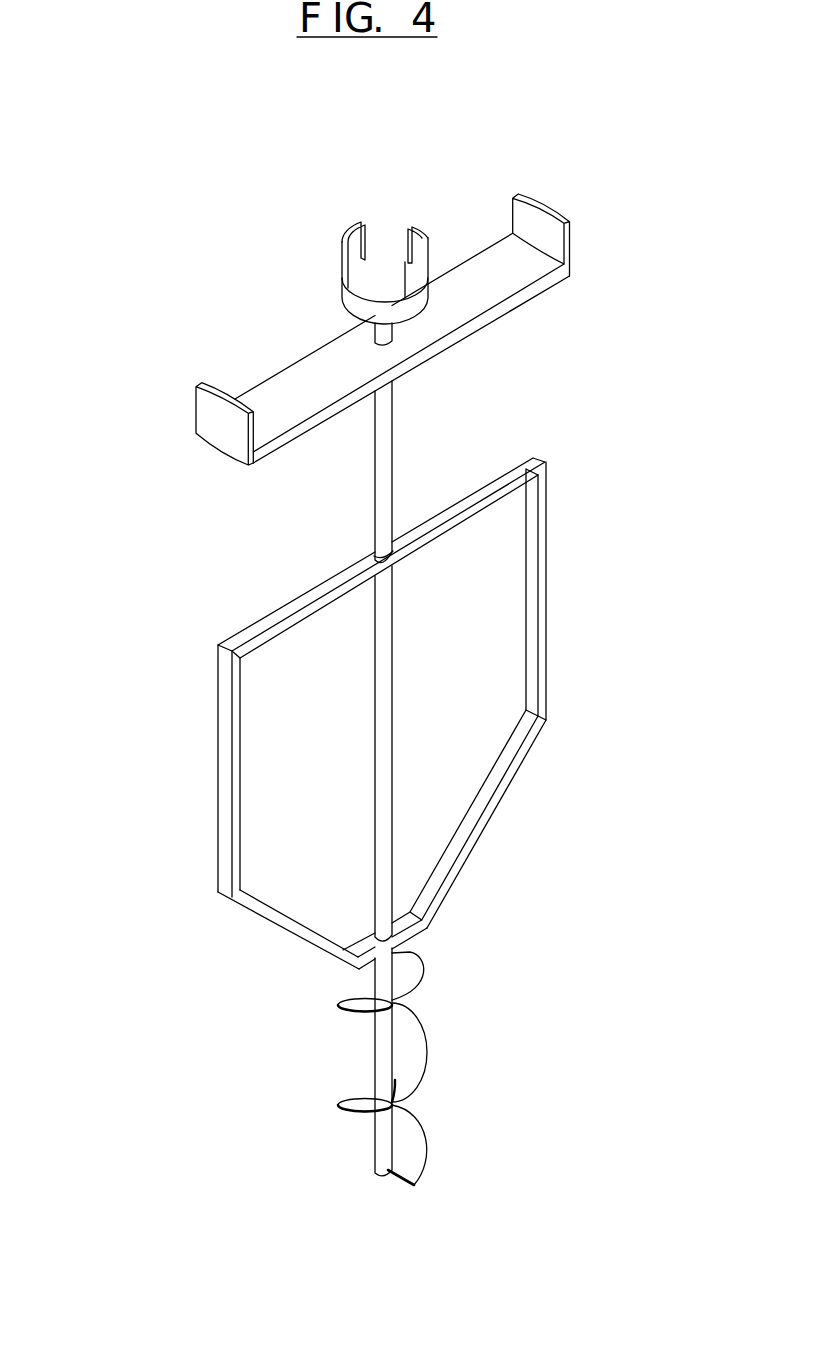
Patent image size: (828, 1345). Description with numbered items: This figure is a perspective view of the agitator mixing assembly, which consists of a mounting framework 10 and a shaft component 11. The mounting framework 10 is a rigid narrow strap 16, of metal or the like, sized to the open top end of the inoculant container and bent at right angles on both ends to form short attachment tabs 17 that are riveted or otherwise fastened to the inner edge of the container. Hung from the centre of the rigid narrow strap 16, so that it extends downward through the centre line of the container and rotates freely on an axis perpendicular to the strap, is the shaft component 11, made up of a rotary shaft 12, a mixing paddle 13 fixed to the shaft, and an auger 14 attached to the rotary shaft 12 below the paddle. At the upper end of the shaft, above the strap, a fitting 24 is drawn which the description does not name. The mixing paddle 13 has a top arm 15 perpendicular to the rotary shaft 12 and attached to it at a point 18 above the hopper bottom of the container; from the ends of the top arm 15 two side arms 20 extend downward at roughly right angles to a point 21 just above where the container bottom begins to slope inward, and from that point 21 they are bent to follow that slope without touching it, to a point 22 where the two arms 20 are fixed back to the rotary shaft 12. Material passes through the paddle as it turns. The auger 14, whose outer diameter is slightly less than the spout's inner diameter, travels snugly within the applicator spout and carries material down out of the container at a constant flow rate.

The mounting framework 10 is at (547, 200).
The shaft component 11 is at (650, 1077).
The rotary shaft 12 is at (380, 465).
The mixing paddle 13 is at (93, 675).
The auger 14 is at (415, 1050).
The top arm 15 is at (290, 602).
The rigid narrow strap 16 is at (522, 310).
The attachment tabs 17 is at (230, 396).
The attachment point 18 is at (397, 543).
The side arms 20 is at (547, 613).
The bend point 21 is at (547, 720).
The fixing point 22 is at (374, 936).
The socket bracket on handle bar 24 is at (367, 230).